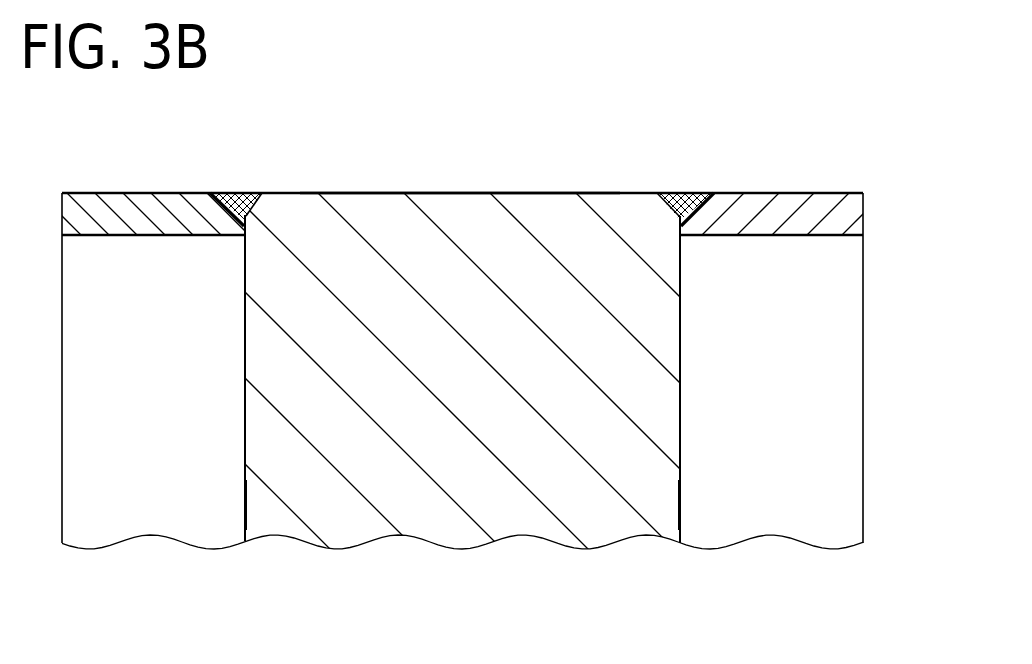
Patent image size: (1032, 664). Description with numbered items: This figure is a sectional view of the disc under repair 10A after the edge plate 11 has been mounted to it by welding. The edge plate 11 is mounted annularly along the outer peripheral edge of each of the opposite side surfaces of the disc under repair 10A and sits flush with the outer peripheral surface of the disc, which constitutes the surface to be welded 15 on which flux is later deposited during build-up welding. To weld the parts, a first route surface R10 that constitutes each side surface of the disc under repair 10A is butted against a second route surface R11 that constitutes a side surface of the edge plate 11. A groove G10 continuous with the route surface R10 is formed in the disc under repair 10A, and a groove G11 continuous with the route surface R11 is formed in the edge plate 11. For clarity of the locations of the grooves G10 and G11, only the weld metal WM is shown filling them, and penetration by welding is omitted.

The disc under repair 10A is at (422, 192).
The edge plate 11 is at (82, 193).
The surface to be welded 15 is at (540, 192).
The groove G10 is at (267, 193).
The groove G11 is at (226, 193).
The weld metal WM is at (238, 193).
The first route surface R10 is at (246, 470).
The second route surface R11 is at (250, 506).